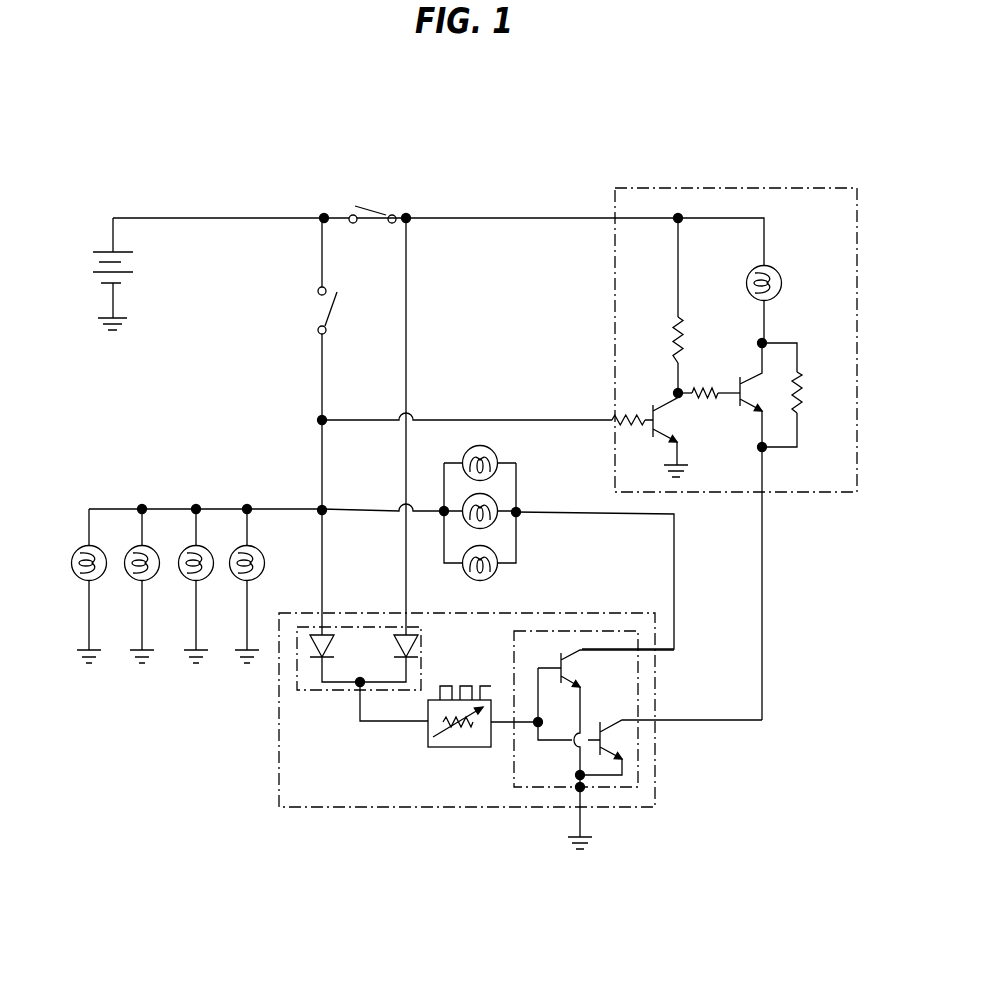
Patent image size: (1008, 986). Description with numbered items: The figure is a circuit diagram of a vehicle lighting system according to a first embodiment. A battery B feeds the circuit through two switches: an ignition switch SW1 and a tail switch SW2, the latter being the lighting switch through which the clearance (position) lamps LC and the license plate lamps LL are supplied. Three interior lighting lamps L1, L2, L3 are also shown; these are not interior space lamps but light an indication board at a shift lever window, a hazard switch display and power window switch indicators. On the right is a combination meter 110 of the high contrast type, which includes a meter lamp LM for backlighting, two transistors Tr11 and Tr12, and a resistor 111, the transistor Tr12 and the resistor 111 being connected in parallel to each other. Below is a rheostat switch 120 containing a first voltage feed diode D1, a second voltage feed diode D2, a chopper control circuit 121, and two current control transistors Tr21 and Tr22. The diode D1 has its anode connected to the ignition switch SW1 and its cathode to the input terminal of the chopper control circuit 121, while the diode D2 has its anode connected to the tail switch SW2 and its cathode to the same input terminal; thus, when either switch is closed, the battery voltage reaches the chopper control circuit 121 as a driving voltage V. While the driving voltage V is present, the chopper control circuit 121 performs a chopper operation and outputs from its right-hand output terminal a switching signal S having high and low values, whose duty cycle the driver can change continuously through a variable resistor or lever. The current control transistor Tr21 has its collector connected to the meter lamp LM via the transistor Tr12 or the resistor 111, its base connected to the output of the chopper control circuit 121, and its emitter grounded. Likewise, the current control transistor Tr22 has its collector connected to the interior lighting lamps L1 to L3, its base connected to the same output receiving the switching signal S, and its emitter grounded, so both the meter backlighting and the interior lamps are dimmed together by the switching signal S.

The battery B is at (93, 263).
The ignition switch SW1 is at (377, 200).
The tail switch SW2 is at (316, 308).
The clearance lamps LC is at (133, 573).
The license plate lamps LL is at (240, 540).
The interior lighting lamp L1 is at (482, 444).
The interior lighting lamp L2 is at (497, 497).
The interior lighting lamp L3 is at (497, 549).
The voltage feed diode D1 is at (412, 657).
The voltage feed diode D2 is at (313, 627).
The driving voltage V is at (377, 722).
The switching signal S is at (505, 722).
The chopper control circuit 121 is at (440, 750).
The rheostat switch 120 is at (657, 799).
The current control transistor Tr21 is at (617, 743).
The current control transistor Tr22 is at (572, 668).
The combination meter 110 is at (712, 185).
The transistor Tr11 is at (647, 414).
The transistor Tr12 is at (740, 400).
The resistor 111 is at (807, 387).
The meter lamp LM is at (785, 283).